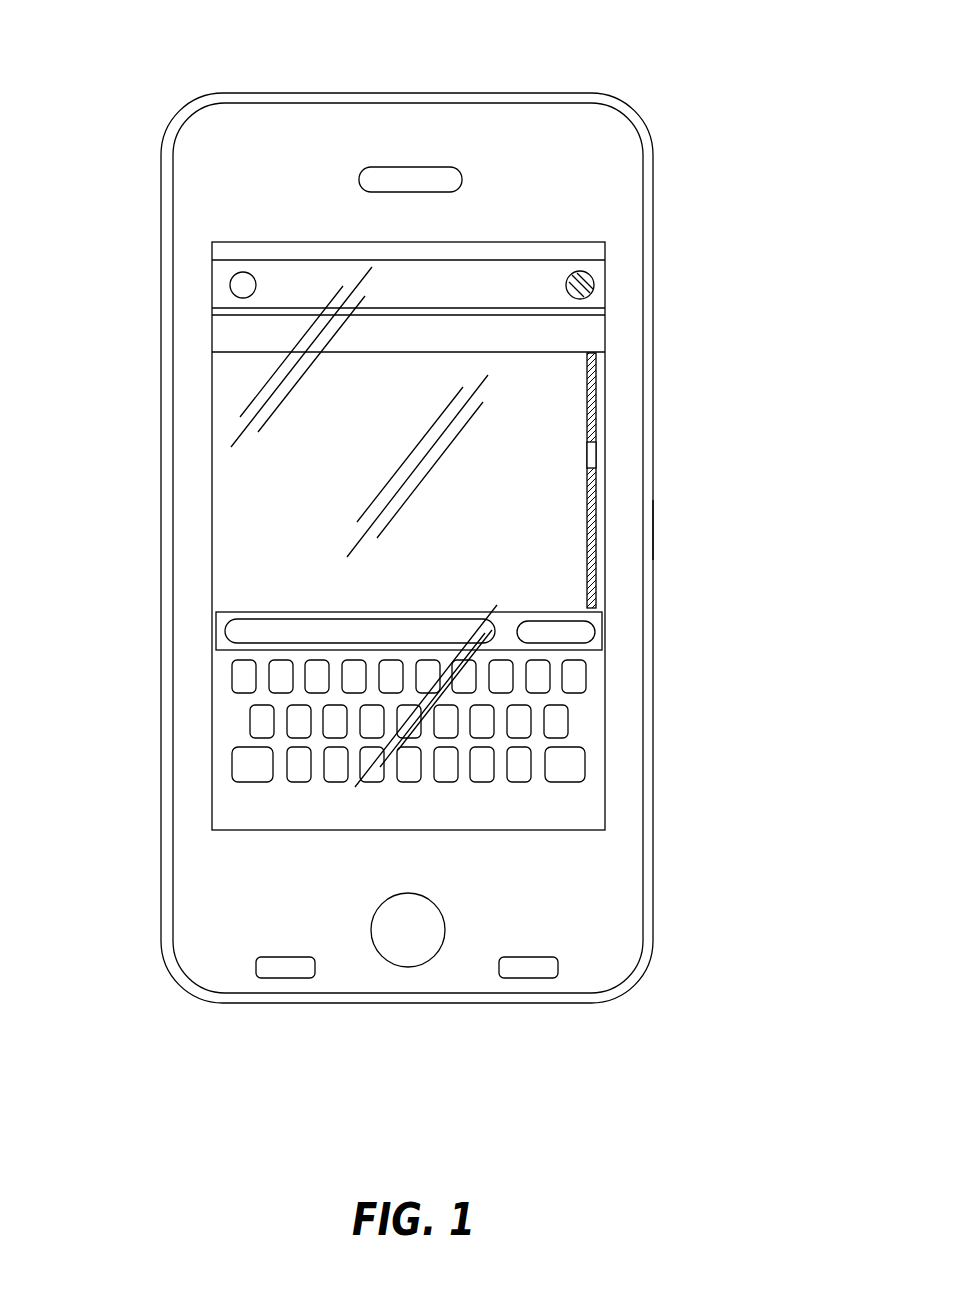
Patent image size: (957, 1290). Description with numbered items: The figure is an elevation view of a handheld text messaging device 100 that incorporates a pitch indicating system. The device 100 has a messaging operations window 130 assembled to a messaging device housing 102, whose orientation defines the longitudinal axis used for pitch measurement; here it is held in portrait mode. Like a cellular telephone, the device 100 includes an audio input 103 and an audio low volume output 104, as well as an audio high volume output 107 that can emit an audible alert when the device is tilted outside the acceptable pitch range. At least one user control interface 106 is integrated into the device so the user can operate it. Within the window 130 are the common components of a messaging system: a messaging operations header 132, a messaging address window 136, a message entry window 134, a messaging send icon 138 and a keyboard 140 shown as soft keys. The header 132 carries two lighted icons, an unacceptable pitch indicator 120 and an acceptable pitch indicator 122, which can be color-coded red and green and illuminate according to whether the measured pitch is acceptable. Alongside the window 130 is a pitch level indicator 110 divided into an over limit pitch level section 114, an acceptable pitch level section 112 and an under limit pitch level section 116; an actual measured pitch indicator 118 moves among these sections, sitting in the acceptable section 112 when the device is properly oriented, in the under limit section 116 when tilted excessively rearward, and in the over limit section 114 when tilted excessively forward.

The text messaging device 100 is at (168, 98).
The messaging device housing 102 is at (653, 528).
The audio input 103 is at (530, 970).
The audio low volume output 104 is at (408, 167).
The user control interface 106 is at (432, 960).
The audio high volume output 107 is at (290, 970).
The pitch level indicator 110 is at (597, 460).
The acceptable pitch level section 112 is at (587, 455).
The over limit pitch level section 114 is at (587, 390).
The under limit pitch level section 116 is at (587, 550).
The actual measured pitch indicator 118 is at (587, 472).
The unacceptable pitch indicator 120 is at (233, 276).
The acceptable pitch indicator 122 is at (592, 270).
The messaging operations window 130 is at (212, 475).
The messaging operations header 132 is at (605, 288).
The message entry window 134 is at (212, 630).
The messaging address window 136 is at (210, 332).
The messaging send icon 138 is at (595, 632).
The keyboard 140 is at (583, 718).